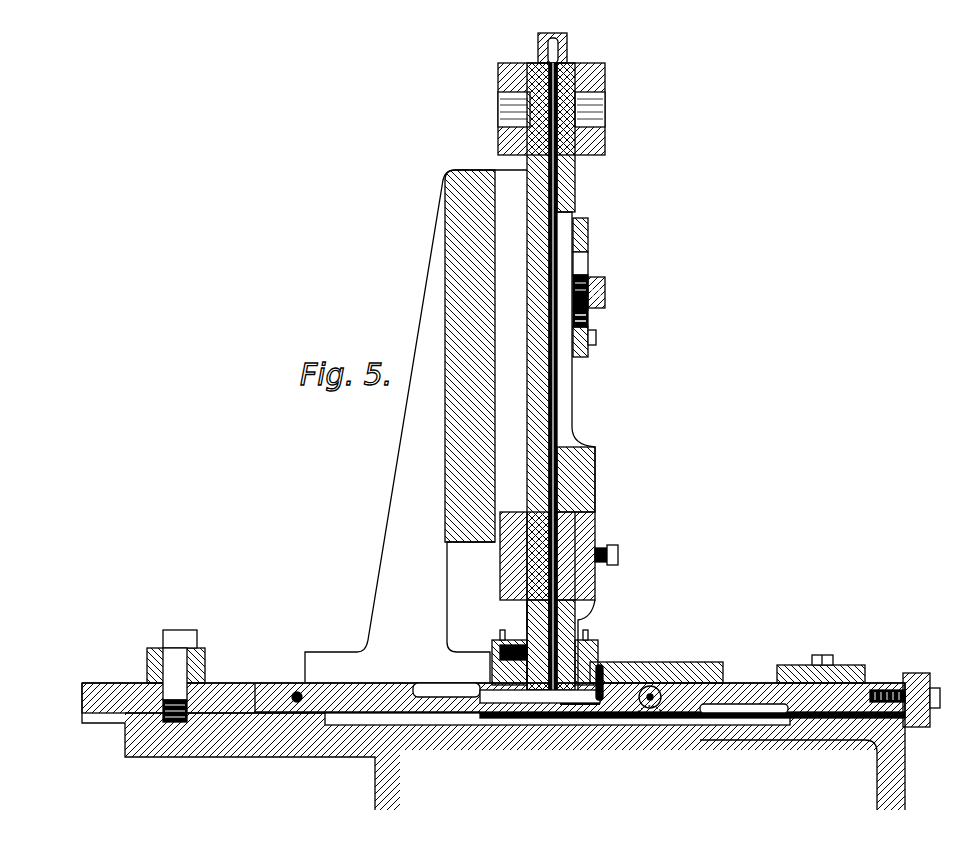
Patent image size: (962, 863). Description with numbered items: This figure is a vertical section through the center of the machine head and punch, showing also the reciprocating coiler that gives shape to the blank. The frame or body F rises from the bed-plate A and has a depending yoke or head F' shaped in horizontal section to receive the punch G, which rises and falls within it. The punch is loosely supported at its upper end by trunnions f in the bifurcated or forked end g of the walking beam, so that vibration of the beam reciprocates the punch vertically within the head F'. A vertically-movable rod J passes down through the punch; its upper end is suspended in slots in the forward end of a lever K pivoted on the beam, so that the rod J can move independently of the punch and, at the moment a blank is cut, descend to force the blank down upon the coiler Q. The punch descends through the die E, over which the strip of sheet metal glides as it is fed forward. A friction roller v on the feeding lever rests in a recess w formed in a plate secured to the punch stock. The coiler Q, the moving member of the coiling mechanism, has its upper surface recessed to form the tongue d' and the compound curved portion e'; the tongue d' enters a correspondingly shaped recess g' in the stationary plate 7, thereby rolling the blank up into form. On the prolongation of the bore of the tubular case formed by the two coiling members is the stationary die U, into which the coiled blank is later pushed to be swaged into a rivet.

The bed-plate A is at (493, 746).
The reciprocating coiler Q is at (372, 683).
The stationary plate 7 is at (822, 712).
The recess g' is at (744, 682).
The tongue d' is at (581, 731).
The frame F is at (416, 426).
The head F' is at (479, 356).
The forked end of beam g is at (560, 93).
The trunnions f is at (498, 110).
The reciprocating rod J is at (572, 185).
The punch G is at (595, 520).
The lever K is at (557, 33).
The recess w is at (585, 258).
The friction roller v is at (585, 275).
The die E is at (590, 660).
The compound curved portion e' is at (520, 679).
The stationary die U is at (661, 690).